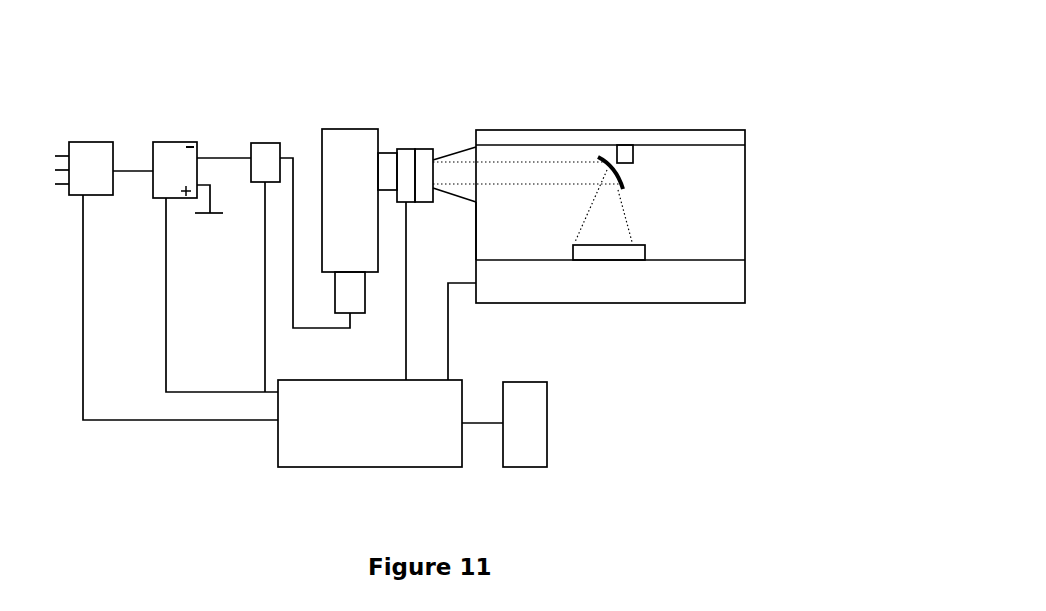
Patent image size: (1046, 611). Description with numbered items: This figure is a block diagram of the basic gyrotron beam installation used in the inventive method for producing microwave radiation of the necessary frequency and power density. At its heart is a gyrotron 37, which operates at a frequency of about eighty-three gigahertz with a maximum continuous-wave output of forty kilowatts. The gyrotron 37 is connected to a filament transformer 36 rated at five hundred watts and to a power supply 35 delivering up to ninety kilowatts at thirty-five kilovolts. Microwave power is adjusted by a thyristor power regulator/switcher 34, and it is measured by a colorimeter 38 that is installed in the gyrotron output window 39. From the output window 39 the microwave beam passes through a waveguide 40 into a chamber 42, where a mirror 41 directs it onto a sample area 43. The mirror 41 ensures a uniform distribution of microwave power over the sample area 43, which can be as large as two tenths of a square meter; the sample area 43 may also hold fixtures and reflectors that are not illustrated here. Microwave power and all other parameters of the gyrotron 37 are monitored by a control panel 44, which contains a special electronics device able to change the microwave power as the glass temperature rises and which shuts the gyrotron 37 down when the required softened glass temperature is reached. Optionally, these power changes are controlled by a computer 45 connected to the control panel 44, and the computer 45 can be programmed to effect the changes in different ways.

The thyristor power regulator/switcher 34 is at (84, 142).
The power supply 35 is at (168, 142).
The filament transformer 36 is at (267, 143).
The gyrotron 37 is at (338, 123).
The colorimeter 38 is at (402, 147).
The gyrotron output window 39 is at (421, 149).
The waveguide 40 is at (476, 145).
The mirror 41 is at (603, 162).
The chamber 42 is at (472, 227).
The sample area 43 is at (645, 248).
The control panel 44 is at (278, 447).
The computer 45 is at (544, 447).